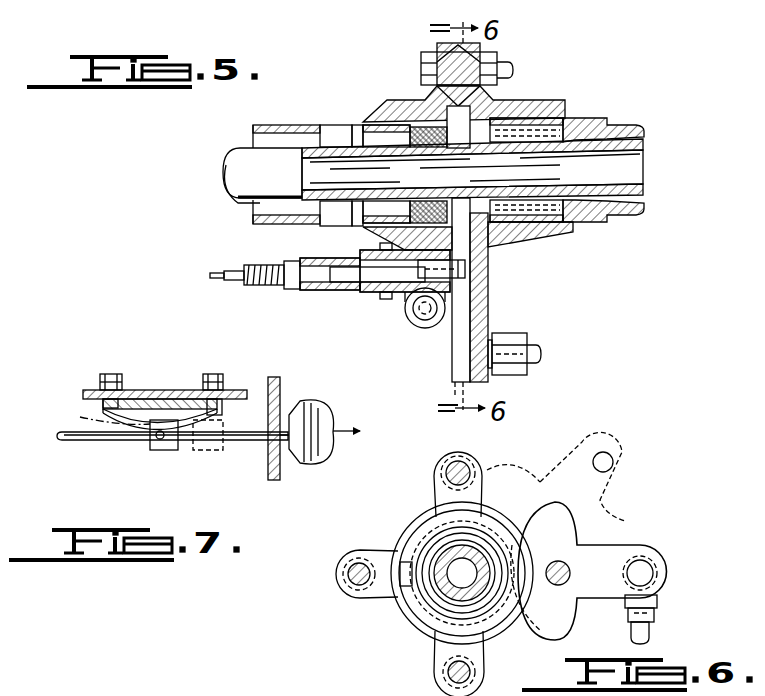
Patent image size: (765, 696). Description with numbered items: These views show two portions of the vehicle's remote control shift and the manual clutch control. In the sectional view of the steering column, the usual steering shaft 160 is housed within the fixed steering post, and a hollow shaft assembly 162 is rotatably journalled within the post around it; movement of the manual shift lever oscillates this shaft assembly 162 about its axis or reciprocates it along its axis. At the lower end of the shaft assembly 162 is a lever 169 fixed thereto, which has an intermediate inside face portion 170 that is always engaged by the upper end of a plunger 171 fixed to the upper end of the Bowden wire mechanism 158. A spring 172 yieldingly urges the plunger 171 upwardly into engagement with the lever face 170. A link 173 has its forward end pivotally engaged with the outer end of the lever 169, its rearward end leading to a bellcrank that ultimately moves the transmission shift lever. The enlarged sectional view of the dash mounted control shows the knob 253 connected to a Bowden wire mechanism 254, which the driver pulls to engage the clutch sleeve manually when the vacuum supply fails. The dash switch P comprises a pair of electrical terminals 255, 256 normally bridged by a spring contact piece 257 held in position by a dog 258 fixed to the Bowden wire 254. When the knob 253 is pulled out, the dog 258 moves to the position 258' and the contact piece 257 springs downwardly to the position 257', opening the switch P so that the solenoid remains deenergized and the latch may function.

In FIG. 5, the Bowden wire mechanism 158 is at (232, 271).
In FIG. 5, the steering shaft 160 is at (626, 157).
In FIG. 6, the steering shaft 160 is at (444, 588).
In FIG. 5, the hollow shaft assembly 162 is at (612, 124).
In FIG. 6, the hollow shaft assembly 162 is at (428, 537).
In FIG. 5, the lever 169 is at (486, 306).
In FIG. 6, the lever 169 is at (613, 550).
In FIG. 5, the intermediate inside face portion 170 is at (460, 333).
In FIG. 6, the intermediate inside face portion 170 is at (550, 637).
In FIG. 5, the plunger 171 is at (480, 266).
In FIG. 5, the spring 172 is at (362, 291).
In FIG. 5, the link 173 is at (517, 334).
In FIG. 6, the link 173 is at (652, 638).
In FIG. 7, the dash switch P is at (182, 388).
In FIG. 7, the knob 253 is at (318, 418).
In FIG. 7, the Bowden wire mechanism 254 is at (120, 443).
In FIG. 7, the electrical terminal 255 is at (113, 376).
In FIG. 7, the electrical terminal 256 is at (219, 376).
In FIG. 7, the spring contact piece 257 is at (160, 398).
In FIG. 7, the contact piece open position 257' is at (88, 421).
In FIG. 7, the dog 258 is at (157, 452).
In FIG. 7, the dog moved position 258' is at (219, 452).